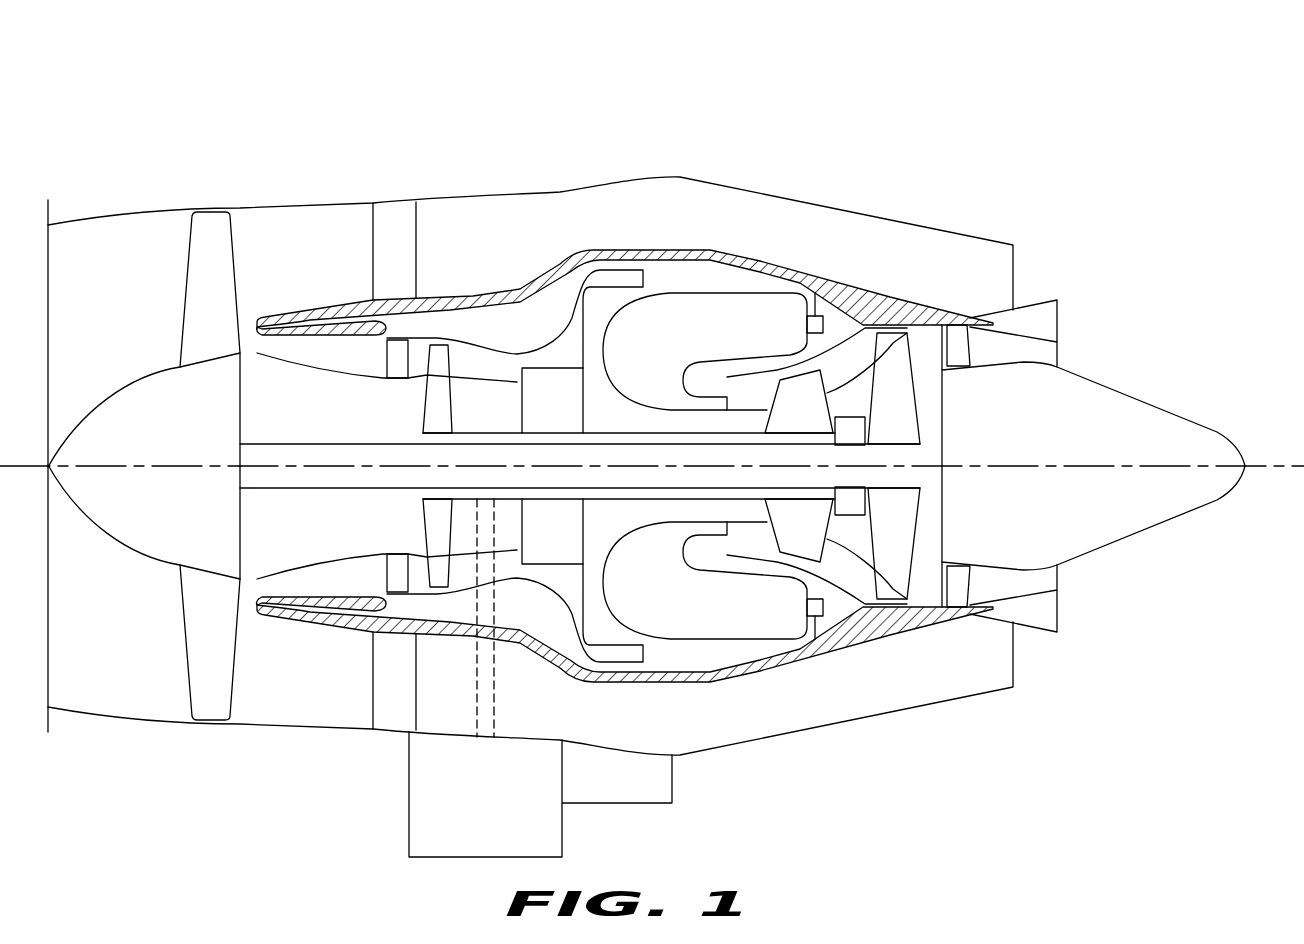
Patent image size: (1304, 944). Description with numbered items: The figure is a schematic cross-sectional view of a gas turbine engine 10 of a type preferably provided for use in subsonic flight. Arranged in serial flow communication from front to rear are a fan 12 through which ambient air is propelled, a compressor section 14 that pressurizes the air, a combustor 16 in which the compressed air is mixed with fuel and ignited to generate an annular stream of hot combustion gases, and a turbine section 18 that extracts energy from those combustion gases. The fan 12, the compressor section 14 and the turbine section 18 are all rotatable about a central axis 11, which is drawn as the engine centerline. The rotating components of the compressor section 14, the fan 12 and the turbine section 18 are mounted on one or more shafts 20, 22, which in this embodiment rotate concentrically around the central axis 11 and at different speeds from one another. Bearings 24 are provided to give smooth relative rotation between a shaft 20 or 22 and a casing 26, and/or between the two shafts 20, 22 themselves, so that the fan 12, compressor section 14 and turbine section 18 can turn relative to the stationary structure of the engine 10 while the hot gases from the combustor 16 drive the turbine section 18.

The gas turbine engine 10 is at (870, 135).
The central axis 11 is at (1283, 466).
The fan 12 is at (203, 632).
The compressor section 14 is at (475, 360).
The combustor 16 is at (707, 317).
The turbine section 18 is at (847, 537).
The shaft 20 is at (290, 488).
The shaft 22 is at (610, 499).
The bearings 24 is at (850, 427).
The casing 26 is at (790, 260).